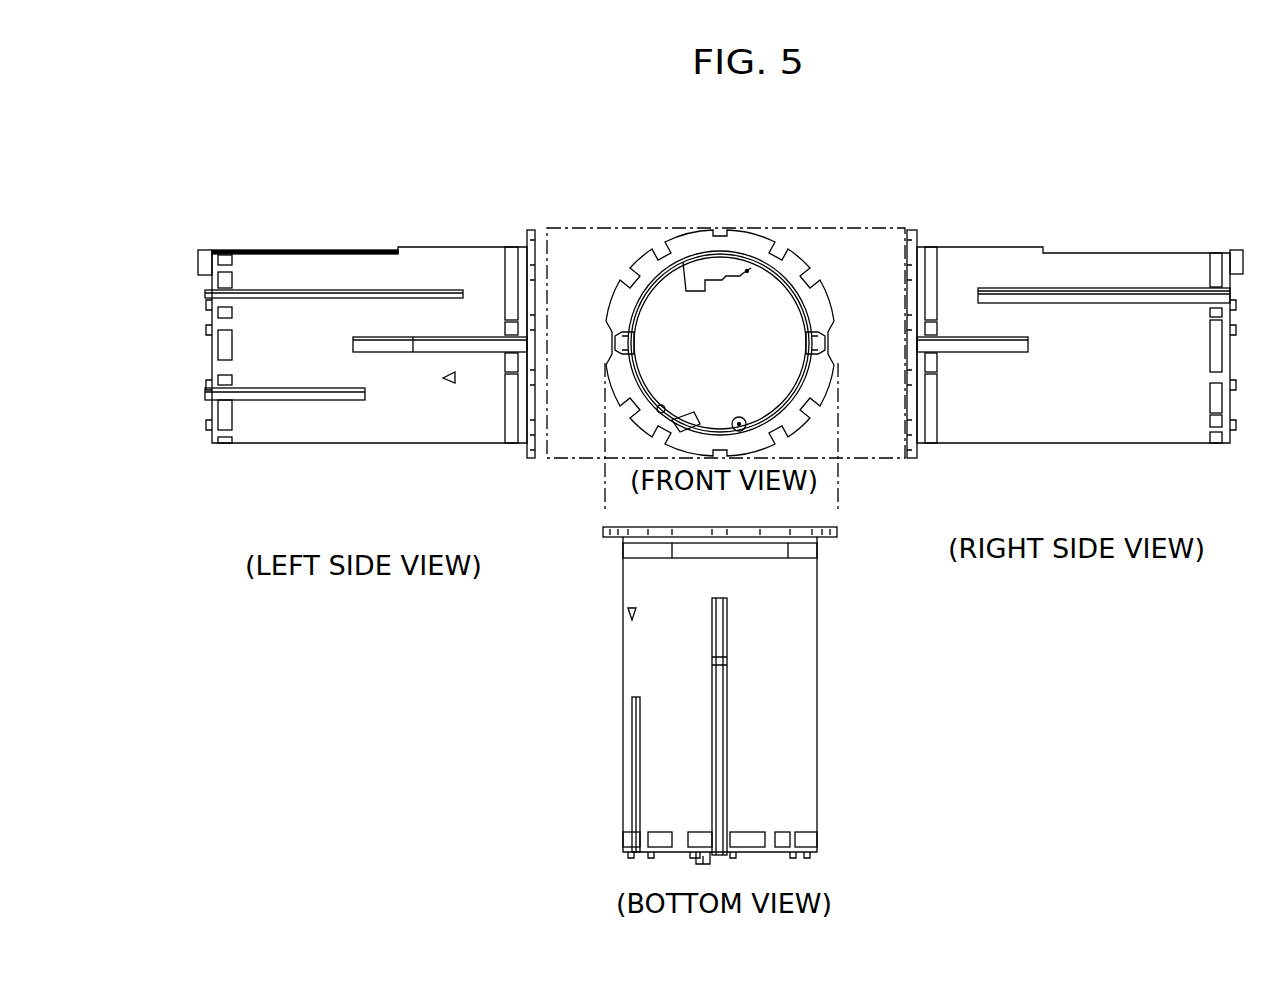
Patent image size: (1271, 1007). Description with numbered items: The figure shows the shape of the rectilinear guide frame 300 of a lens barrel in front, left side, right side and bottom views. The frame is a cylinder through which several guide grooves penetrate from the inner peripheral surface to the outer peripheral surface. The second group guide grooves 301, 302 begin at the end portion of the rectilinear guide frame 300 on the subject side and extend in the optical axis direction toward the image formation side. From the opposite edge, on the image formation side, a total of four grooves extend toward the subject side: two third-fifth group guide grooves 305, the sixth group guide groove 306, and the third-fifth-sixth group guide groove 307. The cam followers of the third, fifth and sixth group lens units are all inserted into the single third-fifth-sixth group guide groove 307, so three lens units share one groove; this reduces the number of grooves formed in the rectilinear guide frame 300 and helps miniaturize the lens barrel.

The rectilinear guide frame 300 is at (447, 255).
The second group guide groove 301 is at (815, 335).
The second group guide groove 302 is at (400, 343).
The third-fifth group guide groove 305 is at (286, 292).
The sixth group guide groove 306 is at (283, 395).
The third-fifth-sixth group guide groove 307 is at (1157, 297).